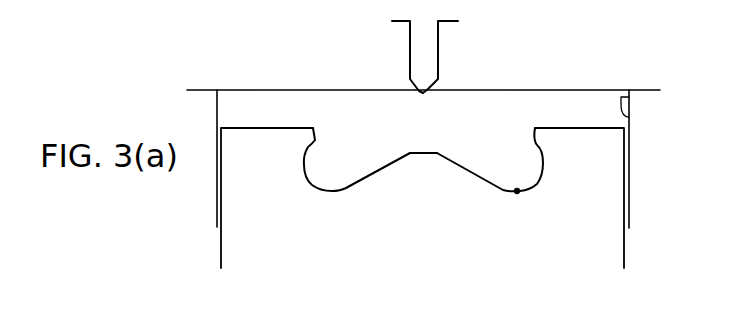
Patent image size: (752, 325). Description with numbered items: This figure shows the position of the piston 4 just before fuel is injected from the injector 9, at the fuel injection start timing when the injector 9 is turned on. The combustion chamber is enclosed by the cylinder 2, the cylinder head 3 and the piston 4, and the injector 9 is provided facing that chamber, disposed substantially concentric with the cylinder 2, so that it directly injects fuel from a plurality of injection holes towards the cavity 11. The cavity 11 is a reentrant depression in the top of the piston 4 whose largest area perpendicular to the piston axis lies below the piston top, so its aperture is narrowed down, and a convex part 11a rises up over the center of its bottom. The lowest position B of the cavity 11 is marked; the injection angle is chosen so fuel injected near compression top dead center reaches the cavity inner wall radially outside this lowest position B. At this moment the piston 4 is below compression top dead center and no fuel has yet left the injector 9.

The cylinder 2 is at (629, 117).
The cylinder head 3 is at (556, 65).
The piston 4 is at (558, 227).
The injector 9 is at (428, 48).
The cavity 11 is at (367, 165).
The convex part 11a is at (424, 165).
The lowest position of the cavity B is at (515, 193).